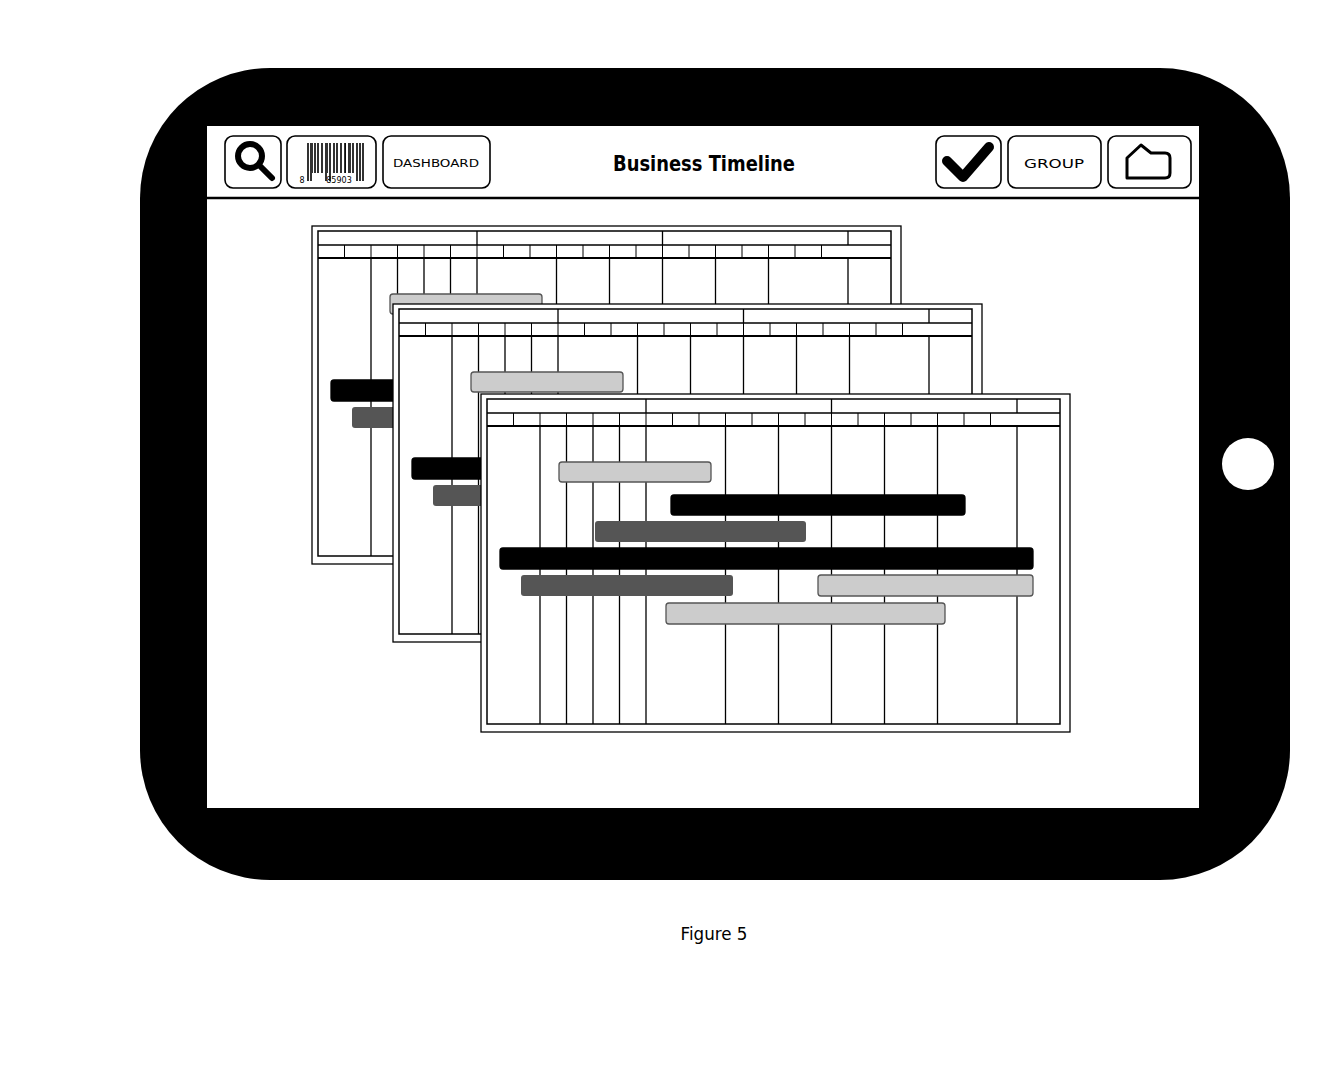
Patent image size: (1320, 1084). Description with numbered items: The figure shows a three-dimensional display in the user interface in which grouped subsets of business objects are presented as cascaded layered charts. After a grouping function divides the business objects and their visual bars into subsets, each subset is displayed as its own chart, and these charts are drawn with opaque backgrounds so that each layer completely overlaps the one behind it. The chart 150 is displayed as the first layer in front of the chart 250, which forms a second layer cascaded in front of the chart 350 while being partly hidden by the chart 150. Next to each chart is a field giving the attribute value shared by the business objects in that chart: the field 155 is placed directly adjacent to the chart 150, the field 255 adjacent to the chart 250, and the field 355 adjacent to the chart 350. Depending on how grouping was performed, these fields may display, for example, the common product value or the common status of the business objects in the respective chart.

The chart 150 is at (804, 560).
The field 155 is at (755, 563).
The chart 250 is at (716, 466).
The field 255 is at (667, 474).
The chart 350 is at (631, 389).
The field 355 is at (579, 395).